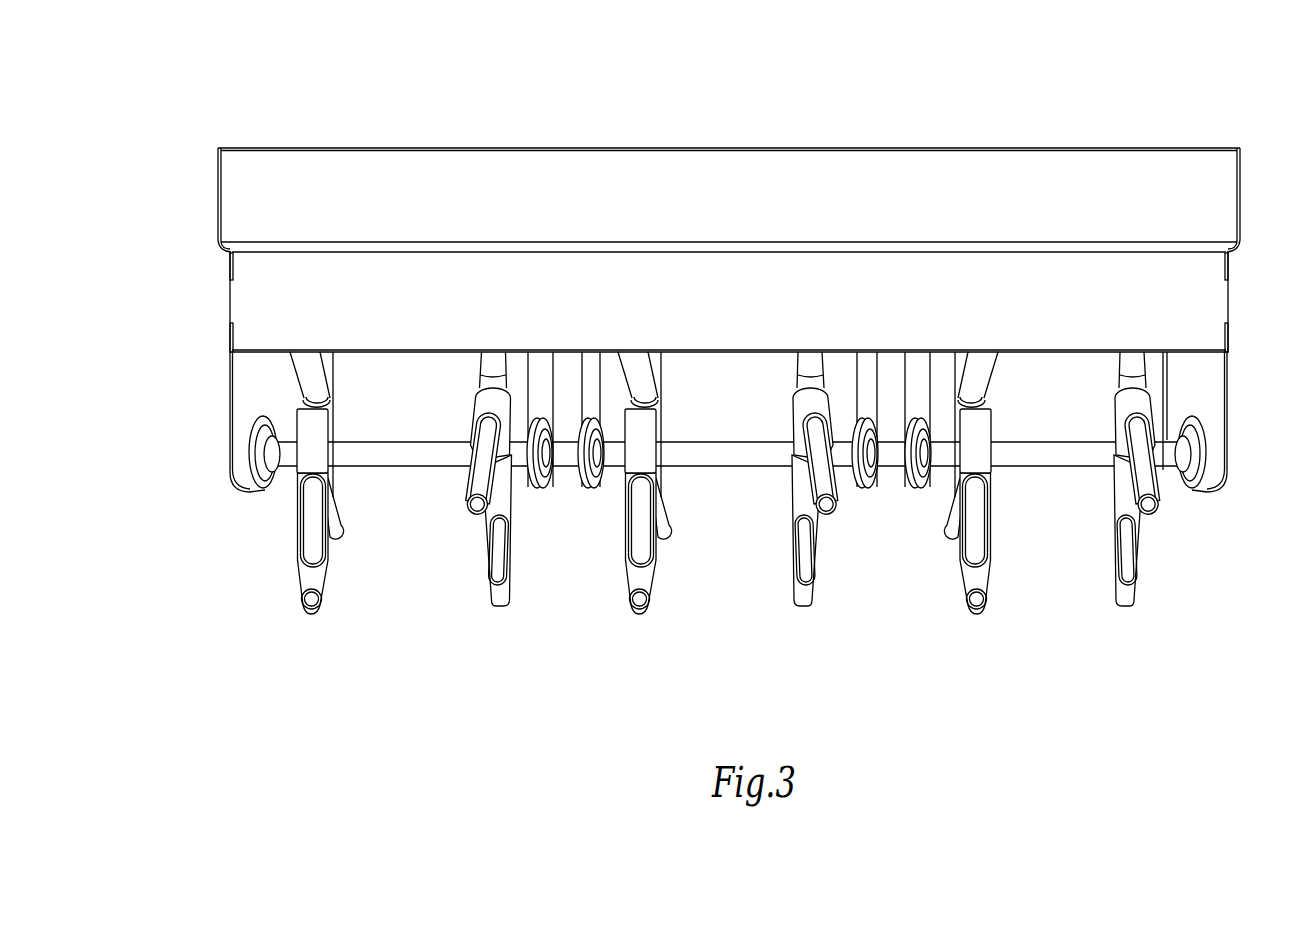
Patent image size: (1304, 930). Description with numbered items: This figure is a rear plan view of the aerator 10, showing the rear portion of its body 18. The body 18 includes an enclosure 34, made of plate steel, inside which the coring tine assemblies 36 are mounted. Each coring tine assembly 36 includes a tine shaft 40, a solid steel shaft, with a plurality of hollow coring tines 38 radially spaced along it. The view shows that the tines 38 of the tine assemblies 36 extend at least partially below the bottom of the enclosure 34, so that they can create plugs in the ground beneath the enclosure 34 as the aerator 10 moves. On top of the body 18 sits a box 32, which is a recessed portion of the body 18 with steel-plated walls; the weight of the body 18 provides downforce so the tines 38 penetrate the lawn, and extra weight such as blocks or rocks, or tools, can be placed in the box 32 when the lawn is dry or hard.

The aerator 10 is at (723, 327).
The body 18 is at (703, 229).
The box 32 is at (233, 192).
The enclosure 34 is at (247, 303).
The coring tine assembly 36 is at (711, 470).
The coring tine 38 is at (497, 545).
The tine shaft 40 is at (437, 457).